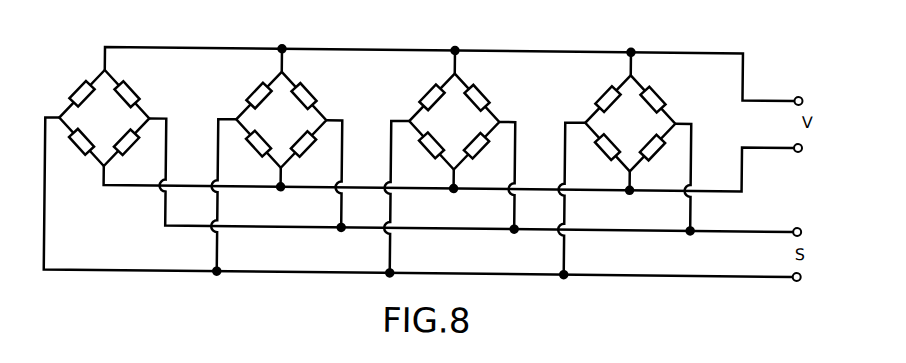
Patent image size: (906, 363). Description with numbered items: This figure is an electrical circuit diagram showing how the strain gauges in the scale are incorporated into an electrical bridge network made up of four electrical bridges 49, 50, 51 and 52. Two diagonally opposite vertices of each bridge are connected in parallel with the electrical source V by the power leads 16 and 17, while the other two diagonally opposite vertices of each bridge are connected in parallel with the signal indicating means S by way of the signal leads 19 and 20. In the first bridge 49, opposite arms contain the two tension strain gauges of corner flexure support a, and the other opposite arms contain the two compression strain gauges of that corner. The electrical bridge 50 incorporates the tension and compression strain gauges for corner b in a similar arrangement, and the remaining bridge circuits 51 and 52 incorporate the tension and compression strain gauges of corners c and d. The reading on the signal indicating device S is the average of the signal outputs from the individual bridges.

The power lead 16 is at (769, 94).
The power lead 17 is at (772, 141).
The signal lead 19 is at (770, 225).
The signal lead 20 is at (746, 270).
The first bridge 49 is at (105, 120).
The electrical bridge 50 is at (277, 160).
The bridge circuit 51 is at (450, 162).
The bridge circuit 52 is at (625, 164).